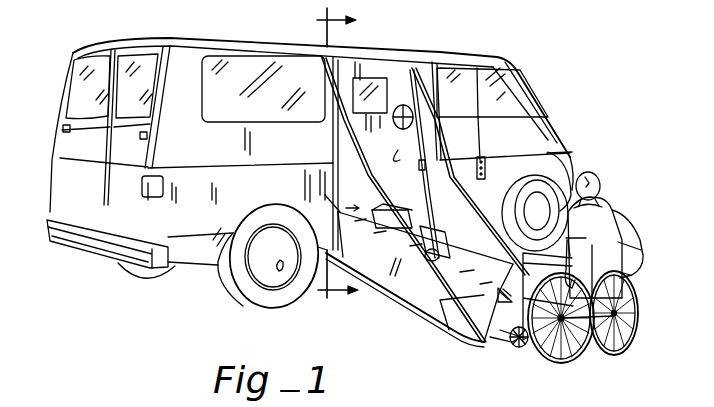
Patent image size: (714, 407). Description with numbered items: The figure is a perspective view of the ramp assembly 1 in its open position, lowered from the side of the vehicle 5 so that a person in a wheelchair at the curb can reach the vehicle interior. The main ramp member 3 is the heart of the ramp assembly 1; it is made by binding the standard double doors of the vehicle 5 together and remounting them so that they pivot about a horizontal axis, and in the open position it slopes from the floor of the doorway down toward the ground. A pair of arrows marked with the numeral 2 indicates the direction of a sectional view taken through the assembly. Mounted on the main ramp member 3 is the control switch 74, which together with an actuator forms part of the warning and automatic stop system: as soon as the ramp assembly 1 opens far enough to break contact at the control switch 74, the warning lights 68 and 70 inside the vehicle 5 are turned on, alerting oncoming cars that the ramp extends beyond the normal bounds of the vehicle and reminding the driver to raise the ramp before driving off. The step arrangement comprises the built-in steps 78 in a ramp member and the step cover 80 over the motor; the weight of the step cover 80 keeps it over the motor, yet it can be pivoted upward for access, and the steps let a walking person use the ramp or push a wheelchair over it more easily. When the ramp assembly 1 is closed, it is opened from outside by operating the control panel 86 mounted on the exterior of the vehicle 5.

The ramp assembly 1 is at (314, 334).
The section line 2 is at (346, 164).
The main ramp member 3 is at (436, 302).
The vehicle 5 is at (243, 158).
The warning light 68 is at (428, 160).
The warning light 70 is at (422, 130).
The control switch 74 is at (422, 202).
The built-in steps 78 is at (412, 298).
The step cover 80 is at (340, 185).
The control panel 86 is at (497, 185).